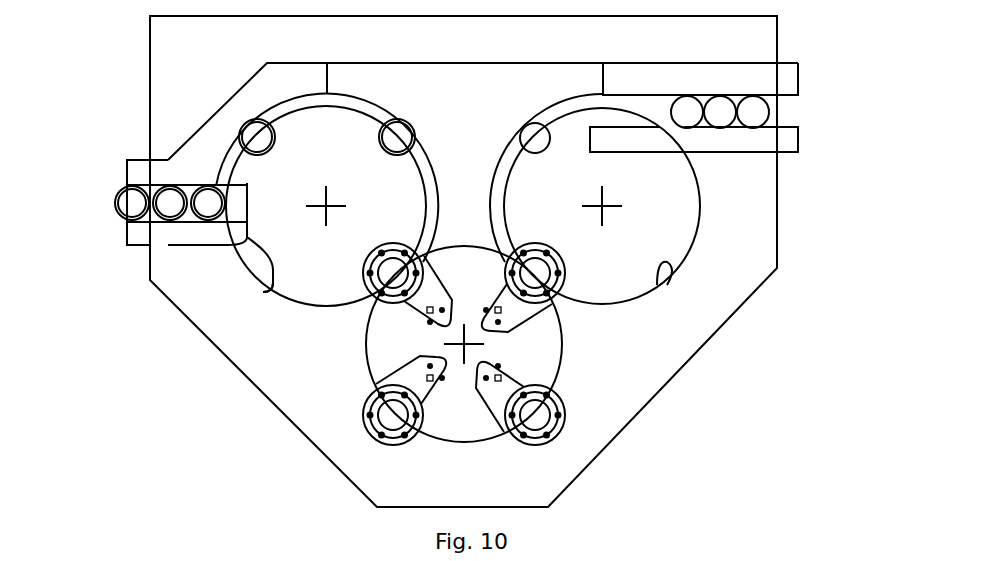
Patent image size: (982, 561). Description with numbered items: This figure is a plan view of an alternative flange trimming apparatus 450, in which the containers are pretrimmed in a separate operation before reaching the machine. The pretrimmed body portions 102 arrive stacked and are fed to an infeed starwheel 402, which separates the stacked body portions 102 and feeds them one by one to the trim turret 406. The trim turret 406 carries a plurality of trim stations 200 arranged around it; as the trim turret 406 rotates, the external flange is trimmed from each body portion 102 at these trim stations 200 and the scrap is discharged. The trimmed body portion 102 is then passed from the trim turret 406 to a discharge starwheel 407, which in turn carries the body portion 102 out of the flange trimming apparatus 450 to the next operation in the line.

The body portion 102 is at (113, 200).
The trim station 200 is at (373, 438).
The infeed starwheel 402 is at (657, 285).
The trim turret 406 is at (467, 443).
The discharge starwheel 407 is at (263, 292).
The flange trimming apparatus 450 is at (857, 470).